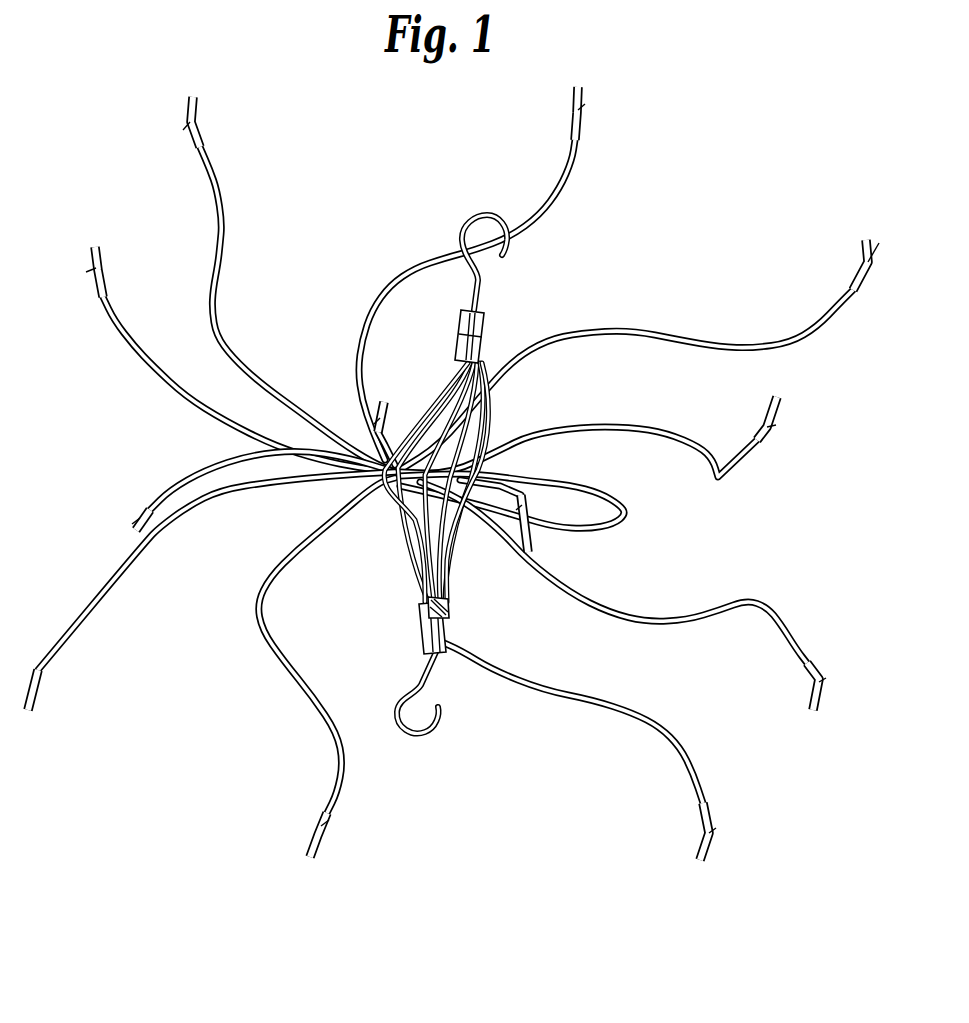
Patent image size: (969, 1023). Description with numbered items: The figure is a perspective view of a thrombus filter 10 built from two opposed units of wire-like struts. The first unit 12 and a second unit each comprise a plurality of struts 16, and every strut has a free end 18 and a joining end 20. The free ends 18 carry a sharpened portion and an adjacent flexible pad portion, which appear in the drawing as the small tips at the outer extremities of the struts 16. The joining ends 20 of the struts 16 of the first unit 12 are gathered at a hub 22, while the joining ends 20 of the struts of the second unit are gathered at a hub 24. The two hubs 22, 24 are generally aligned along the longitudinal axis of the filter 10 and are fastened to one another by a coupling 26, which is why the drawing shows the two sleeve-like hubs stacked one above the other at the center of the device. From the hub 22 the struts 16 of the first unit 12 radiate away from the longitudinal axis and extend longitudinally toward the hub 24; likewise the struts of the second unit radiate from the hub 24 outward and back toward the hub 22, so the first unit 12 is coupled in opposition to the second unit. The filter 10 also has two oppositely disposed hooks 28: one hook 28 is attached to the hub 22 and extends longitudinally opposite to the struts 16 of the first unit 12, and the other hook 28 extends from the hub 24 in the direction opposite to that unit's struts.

The thrombus filter 10 is at (453, 468).
The first unit 12 is at (507, 464).
The struts 16 is at (560, 192).
The free end 18 is at (573, 117).
The joining end 20 is at (454, 468).
The hub 22 is at (458, 345).
The hub 24 is at (450, 615).
The coupling 26 is at (452, 432).
The hooks 28 is at (468, 215).